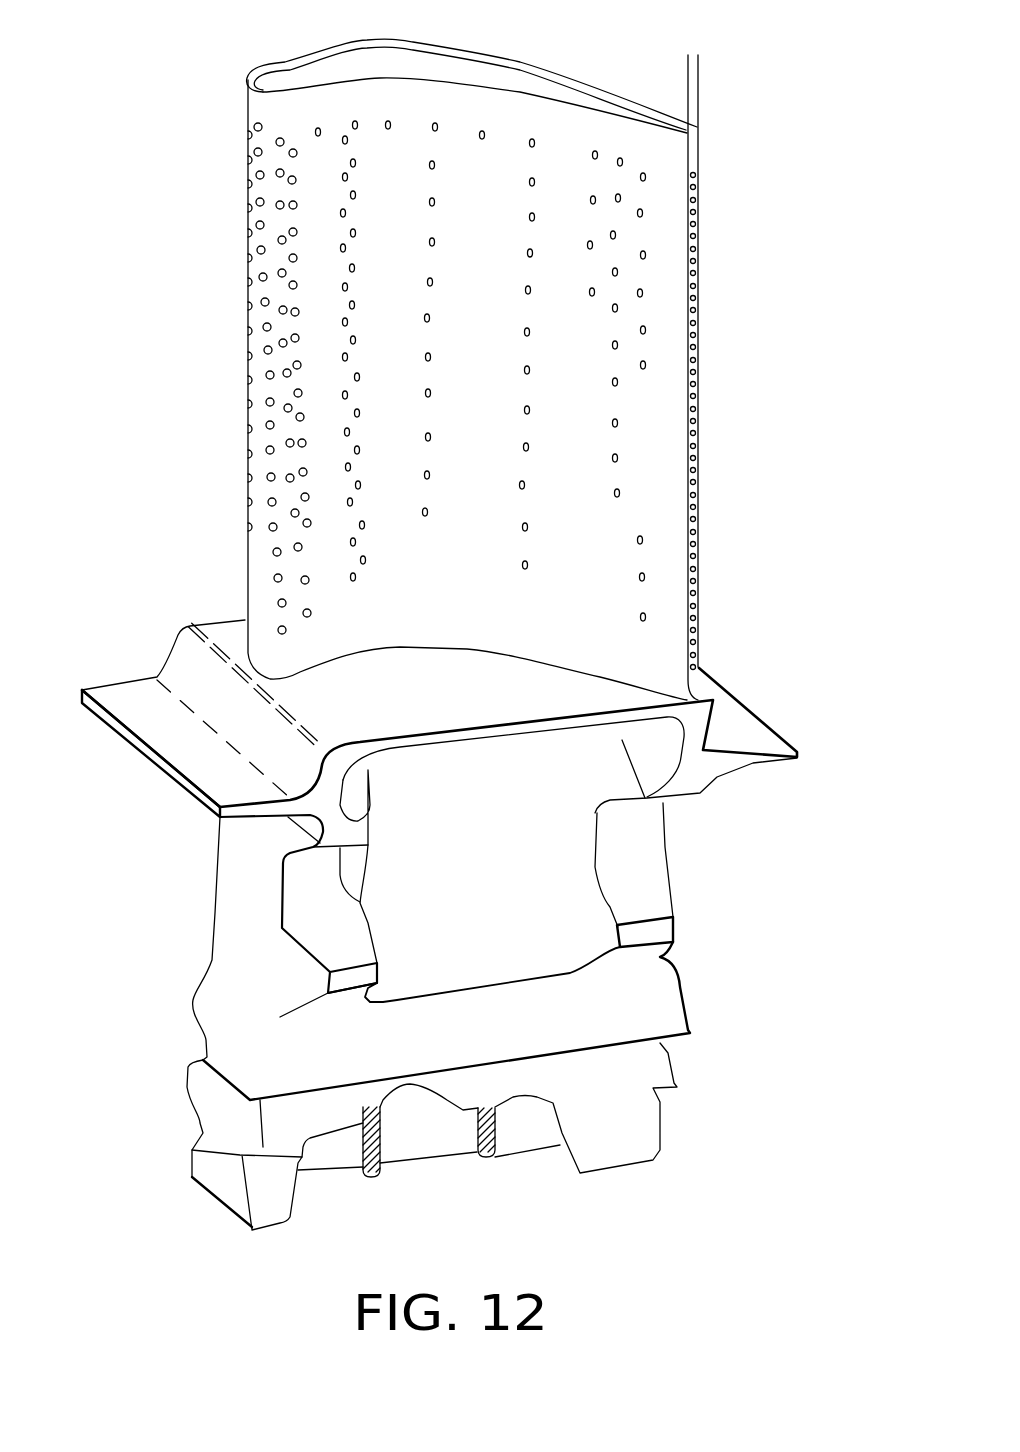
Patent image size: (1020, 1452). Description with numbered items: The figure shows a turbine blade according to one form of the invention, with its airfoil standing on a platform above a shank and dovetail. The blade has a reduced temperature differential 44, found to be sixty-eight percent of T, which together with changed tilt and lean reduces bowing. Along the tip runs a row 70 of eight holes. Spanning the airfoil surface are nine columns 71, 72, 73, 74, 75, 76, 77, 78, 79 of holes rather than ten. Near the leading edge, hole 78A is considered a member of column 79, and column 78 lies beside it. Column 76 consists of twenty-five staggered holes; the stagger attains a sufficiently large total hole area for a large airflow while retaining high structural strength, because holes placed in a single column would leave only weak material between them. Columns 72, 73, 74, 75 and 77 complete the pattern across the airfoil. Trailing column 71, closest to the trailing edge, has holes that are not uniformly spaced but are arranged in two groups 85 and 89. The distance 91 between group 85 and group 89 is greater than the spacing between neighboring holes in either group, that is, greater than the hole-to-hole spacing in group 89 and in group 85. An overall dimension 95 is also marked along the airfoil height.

The differential 44 is at (650, 103).
The row of holes at the tip 70 is at (318, 147).
The trailing column of holes 71 is at (643, 646).
The column of holes 72 is at (619, 533).
The column of holes 73 is at (592, 330).
The column of holes 74 is at (524, 603).
The column of holes 75 is at (423, 551).
The column of staggered holes 76 is at (364, 608).
The column of holes 77 is at (312, 551).
The column of holes 78 is at (305, 648).
The hole 78A is at (250, 126).
The column of holes 79 is at (273, 660).
The group of holes 85 is at (655, 538).
The group of holes 89 is at (652, 173).
The distance between groups 91 is at (653, 377).
The airfoil span height 95 is at (68, 80).